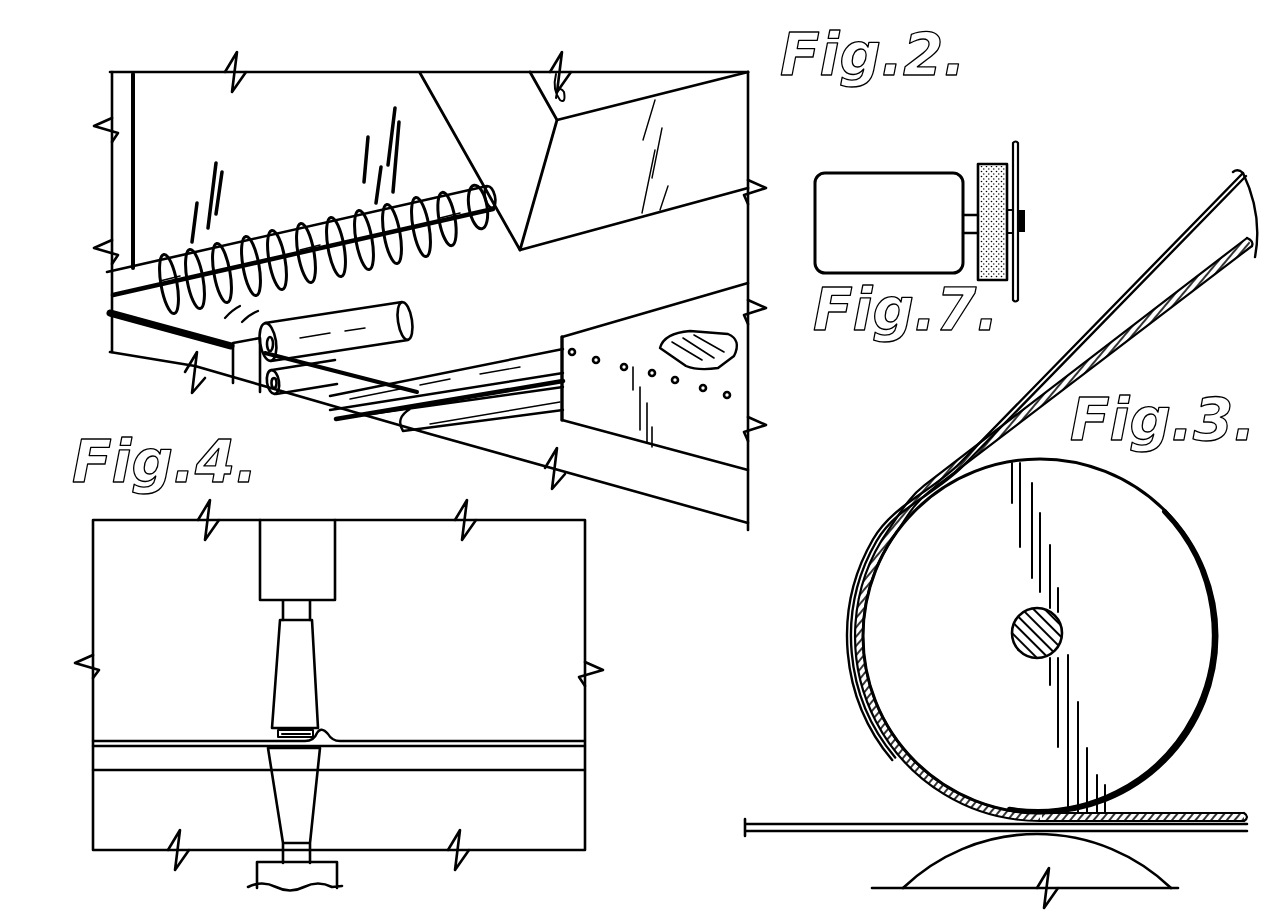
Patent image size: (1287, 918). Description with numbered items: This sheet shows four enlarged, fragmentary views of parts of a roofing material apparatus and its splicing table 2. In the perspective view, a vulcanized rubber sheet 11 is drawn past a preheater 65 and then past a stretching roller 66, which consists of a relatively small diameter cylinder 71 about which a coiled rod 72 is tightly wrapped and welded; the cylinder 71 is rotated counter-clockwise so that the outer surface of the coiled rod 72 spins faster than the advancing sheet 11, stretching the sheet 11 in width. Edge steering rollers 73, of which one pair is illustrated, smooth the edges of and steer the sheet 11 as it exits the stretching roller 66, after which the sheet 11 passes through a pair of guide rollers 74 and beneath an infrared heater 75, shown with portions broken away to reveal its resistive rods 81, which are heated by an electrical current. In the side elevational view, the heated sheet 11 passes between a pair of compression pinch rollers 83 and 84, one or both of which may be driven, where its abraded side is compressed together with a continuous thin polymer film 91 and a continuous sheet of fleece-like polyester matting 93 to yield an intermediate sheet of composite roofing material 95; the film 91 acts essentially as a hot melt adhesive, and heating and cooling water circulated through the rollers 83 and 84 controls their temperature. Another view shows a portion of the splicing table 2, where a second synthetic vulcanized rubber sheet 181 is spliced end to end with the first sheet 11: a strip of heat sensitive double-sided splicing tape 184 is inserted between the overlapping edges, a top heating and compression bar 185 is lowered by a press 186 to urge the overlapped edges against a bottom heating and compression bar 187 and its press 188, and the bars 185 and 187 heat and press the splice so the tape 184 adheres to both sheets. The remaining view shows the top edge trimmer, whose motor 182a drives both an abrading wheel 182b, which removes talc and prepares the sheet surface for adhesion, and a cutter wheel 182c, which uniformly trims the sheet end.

In FIG. 4, the splicing table 2 is at (455, 640).
In FIG. 4, the vulcanized rubber sheet 11 is at (452, 740).
In FIG. 3, the vulcanized rubber sheet 11 is at (862, 822).
In FIG. 2, the preheater 65 is at (606, 176).
In FIG. 2, the stretching roller 66 is at (312, 212).
In FIG. 2, the cylinder 71 is at (183, 262).
In FIG. 2, the coiled rod 72 is at (272, 244).
In FIG. 2, the edge steering rollers 73 is at (362, 305).
In FIG. 2, the guide rollers 74 is at (518, 410).
In FIG. 2, the infrared heater 75 is at (614, 330).
In FIG. 2, the resistive rods 81 is at (714, 342).
In FIG. 3, the compression pinch roller 83 is at (1206, 570).
In FIG. 3, the compression pinch roller 84 is at (933, 866).
In FIG. 3, the polymer film 91 is at (1130, 293).
In FIG. 3, the polyester matting 93 is at (1150, 326).
In FIG. 3, the composite roofing material 95 is at (1265, 786).
In FIG. 4, the second synthetic vulcanized rubber sheet 181 is at (193, 739).
In FIG. 7, the motor 182a is at (905, 185).
In FIG. 7, the abrading wheel 182b is at (993, 165).
In FIG. 7, the cutter wheel 182c is at (1000, 245).
In FIG. 4, the splicing tape 184 is at (312, 727).
In FIG. 4, the top heating and compression bar 185 is at (318, 690).
In FIG. 4, the press 186 is at (277, 567).
In FIG. 4, the bottom heating and compression bar 187 is at (303, 808).
In FIG. 4, the press 188 is at (335, 882).